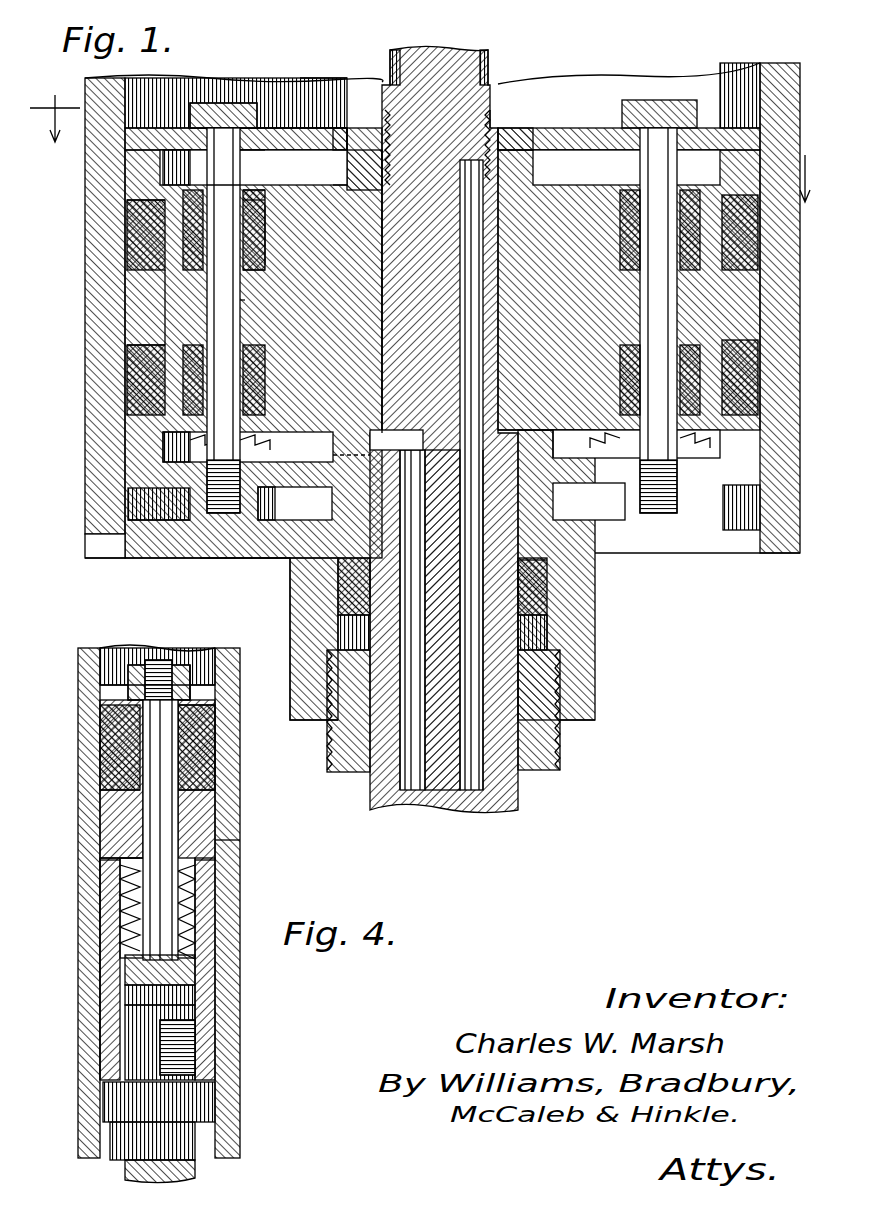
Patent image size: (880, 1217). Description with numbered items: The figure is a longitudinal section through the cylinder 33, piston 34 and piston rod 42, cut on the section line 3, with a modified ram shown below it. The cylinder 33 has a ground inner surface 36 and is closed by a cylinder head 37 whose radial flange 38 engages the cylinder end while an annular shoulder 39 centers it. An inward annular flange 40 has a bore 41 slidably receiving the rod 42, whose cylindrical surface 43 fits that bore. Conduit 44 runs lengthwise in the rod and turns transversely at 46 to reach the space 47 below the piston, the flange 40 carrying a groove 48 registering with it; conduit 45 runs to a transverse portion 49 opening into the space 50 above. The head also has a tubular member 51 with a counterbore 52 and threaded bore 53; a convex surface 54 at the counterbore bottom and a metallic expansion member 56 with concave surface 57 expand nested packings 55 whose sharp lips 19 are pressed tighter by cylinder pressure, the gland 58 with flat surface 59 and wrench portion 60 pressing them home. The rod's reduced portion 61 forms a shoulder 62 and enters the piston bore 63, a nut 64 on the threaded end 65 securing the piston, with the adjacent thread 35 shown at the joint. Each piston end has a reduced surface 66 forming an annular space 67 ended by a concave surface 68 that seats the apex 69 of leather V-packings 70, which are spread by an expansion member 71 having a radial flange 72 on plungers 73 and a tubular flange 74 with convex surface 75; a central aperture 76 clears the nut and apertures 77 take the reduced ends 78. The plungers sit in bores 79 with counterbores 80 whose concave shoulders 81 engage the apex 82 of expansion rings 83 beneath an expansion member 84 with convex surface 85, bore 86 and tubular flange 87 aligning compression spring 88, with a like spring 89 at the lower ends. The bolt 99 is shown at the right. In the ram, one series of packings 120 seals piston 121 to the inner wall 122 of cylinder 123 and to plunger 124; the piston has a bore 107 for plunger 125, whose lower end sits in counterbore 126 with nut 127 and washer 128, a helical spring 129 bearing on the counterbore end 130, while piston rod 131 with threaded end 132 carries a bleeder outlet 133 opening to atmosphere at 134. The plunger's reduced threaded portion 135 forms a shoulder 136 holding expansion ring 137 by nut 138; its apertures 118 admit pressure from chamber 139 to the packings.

In FIG. 1, the section line 3 is at (420, 135).
In FIG. 1, the sharp lips 19 is at (525, 560).
In FIG. 1, the cylinder 33 is at (100, 295).
In FIG. 1, the piston 34 is at (323, 127).
In FIG. 1, the thread 35 is at (392, 187).
In FIG. 1, the inner surface 36 is at (125, 113).
In FIG. 1, the cylinder head 37 is at (212, 558).
In FIG. 1, the radially extending flange 38 is at (100, 556).
In FIG. 1, the annular shoulder 39 is at (140, 505).
In FIG. 1, the inwardly projecting annular flange 40 is at (593, 470).
In FIG. 1, the circular bore 41 is at (555, 492).
In FIG. 1, the piston rod 42 is at (455, 50).
In FIG. 1, the external cylindrical surface 43 is at (512, 453).
In FIG. 1, the conduit 44 is at (427, 757).
In FIG. 1, the conduit 45 is at (478, 758).
In FIG. 1, the transverse conduit portion 46 is at (392, 440).
In FIG. 1, the space 47 is at (307, 465).
In FIG. 1, the groove 48 is at (357, 433).
In FIG. 1, the transversely extending portion 49 is at (512, 128).
In FIG. 1, the space 50 is at (587, 167).
In FIG. 1, the tubular member 51 is at (588, 608).
In FIG. 1, the counterbore 52 is at (547, 593).
In FIG. 1, the threaded bore 53 is at (558, 667).
In FIG. 1, the convexly curved surface 54 is at (497, 553).
In FIG. 1, the expansion rings 55 is at (512, 563).
In FIG. 1, the expansion member 56 is at (533, 637).
In FIG. 1, the concavely curved surface 57 is at (468, 690).
In FIG. 1, the gland 58 is at (547, 730).
In FIG. 1, the flat surface 59 is at (562, 713).
In FIG. 1, the non-circular portion 60 is at (348, 760).
In FIG. 1, the reduced cylindrical portion 61 is at (383, 263).
In FIG. 1, the annular shoulder 62 is at (506, 430).
In FIG. 1, the bore 63 is at (380, 300).
In FIG. 1, the nut 64 is at (375, 117).
In FIG. 1, the threaded end 65 is at (502, 123).
In FIG. 1, the cylindrical surface 66 is at (140, 228).
In FIG. 1, the annular space 67 is at (140, 255).
In FIG. 1, the concave annular surface 68 is at (140, 265).
In FIG. 4, the concave annular surface 68 is at (100, 795).
In FIG. 1, the apex 69 is at (140, 350).
In FIG. 4, the apex 69 is at (215, 725).
In FIG. 1, the leather V-packings 70 is at (125, 385).
In FIG. 1, the expansion member 71 is at (150, 143).
In FIG. 1, the radially extending flange 72 is at (263, 155).
In FIG. 1, the plungers 73 is at (247, 296).
In FIG. 1, the axially extending tubular flange 74 is at (150, 185).
In FIG. 1, the convex expansion surface 75 is at (133, 200).
In FIG. 1, the centrally located aperture 76 is at (338, 128).
In FIG. 1, the apertures 77 is at (265, 128).
In FIG. 1, the reduced ends 78 is at (225, 128).
In FIG. 1, the longitudinally extending bores 79 is at (245, 325).
In FIG. 1, the counter-bore 80 is at (267, 213).
In FIG. 1, the annular shoulder 81 is at (264, 270).
In FIG. 1, the apex 82 is at (267, 235).
In FIG. 1, the expansion rings 83 is at (267, 255).
In FIG. 1, the metallic expansion member 84 is at (253, 193).
In FIG. 1, the convex expansion surface 85 is at (337, 200).
In FIG. 1, the bore 86 is at (228, 187).
In FIG. 1, the tubular flange 87 is at (243, 195).
In FIG. 1, the compression spring 88 is at (172, 163).
In FIG. 1, the spring 89 is at (253, 447).
In FIG. 1, the bolt 99 is at (625, 110).
In FIG. 4, the bore 107 is at (145, 830).
In FIG. 4, the apertures 118 is at (210, 708).
In FIG. 4, the packings 120 is at (200, 750).
In FIG. 4, the piston 121 is at (205, 800).
In FIG. 4, the inner wall 122 is at (213, 670).
In FIG. 4, the cylinder 123 is at (233, 857).
In FIG. 4, the plunger 124 is at (152, 803).
In FIG. 4, the plunger 125 is at (170, 895).
In FIG. 4, the counterbore 126 is at (122, 1017).
In FIG. 4, the nut 127 is at (127, 980).
In FIG. 4, the washer 128 is at (125, 962).
In FIG. 4, the helical spring 129 is at (130, 913).
In FIG. 4, the end of counterbore 130 is at (133, 853).
In FIG. 4, the piston rod 131 is at (133, 1162).
In FIG. 4, the threaded end 132 is at (200, 1038).
In FIG. 4, the bleeder outlet 133 is at (157, 1088).
In FIG. 4, the atmosphere outlet 134 is at (195, 1135).
In FIG. 4, the reduced threaded portion 135 is at (145, 673).
In FIG. 4, the annular shoulder 136 is at (140, 683).
In FIG. 4, the expansion ring 137 is at (190, 668).
In FIG. 4, the nut 138 is at (180, 667).
In FIG. 4, the chamber 139 is at (100, 670).